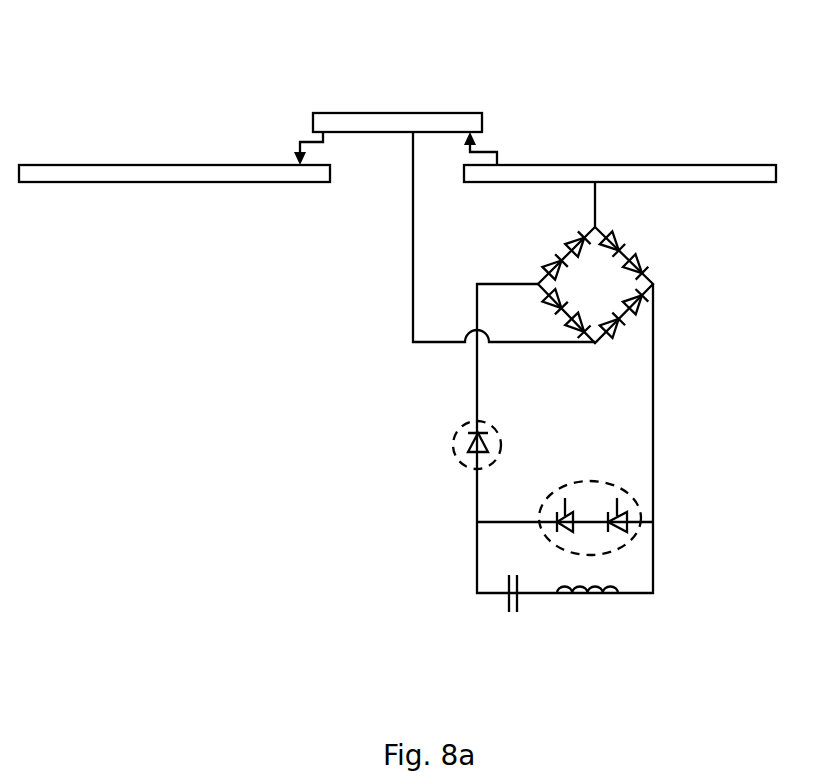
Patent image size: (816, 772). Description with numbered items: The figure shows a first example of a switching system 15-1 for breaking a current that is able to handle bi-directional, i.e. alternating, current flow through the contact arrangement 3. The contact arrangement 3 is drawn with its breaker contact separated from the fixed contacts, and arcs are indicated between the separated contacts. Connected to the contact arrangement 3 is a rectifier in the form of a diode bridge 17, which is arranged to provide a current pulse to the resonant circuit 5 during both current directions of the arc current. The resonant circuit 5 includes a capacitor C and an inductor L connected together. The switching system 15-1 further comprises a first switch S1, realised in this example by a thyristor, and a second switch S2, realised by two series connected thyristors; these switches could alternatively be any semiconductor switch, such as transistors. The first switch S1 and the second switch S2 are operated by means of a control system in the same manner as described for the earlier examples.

The contact arrangement 3 is at (319, 96).
The switching system 15-1 is at (579, 76).
The diode bridge 17 is at (677, 272).
The resonant circuit 5 is at (585, 617).
The first switch S1 is at (465, 462).
The second switch S2 is at (618, 490).
The capacitor C is at (513, 596).
The inductor L is at (591, 610).